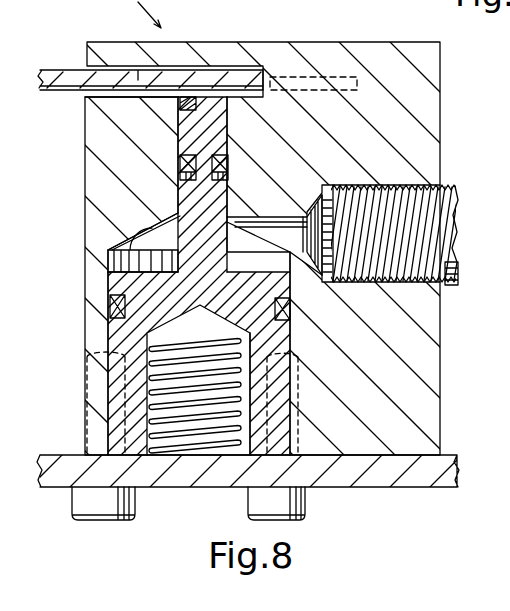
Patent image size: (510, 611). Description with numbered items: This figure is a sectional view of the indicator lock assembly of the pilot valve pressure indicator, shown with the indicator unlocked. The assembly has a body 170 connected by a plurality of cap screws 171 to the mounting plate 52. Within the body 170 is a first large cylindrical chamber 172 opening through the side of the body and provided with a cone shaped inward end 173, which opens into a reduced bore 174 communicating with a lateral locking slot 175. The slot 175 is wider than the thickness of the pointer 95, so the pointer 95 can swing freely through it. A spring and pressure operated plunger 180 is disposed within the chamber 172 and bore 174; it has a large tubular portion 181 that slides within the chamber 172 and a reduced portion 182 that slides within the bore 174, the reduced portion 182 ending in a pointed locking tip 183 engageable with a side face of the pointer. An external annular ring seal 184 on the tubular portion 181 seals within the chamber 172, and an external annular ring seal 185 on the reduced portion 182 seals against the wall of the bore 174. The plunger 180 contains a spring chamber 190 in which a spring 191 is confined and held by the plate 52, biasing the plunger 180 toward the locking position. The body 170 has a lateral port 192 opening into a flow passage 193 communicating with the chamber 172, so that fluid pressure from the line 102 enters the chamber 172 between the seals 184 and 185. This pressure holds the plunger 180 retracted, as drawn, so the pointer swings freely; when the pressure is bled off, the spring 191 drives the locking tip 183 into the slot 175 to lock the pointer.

The mounting plate 52 is at (413, 475).
The pointer 95 is at (71, 72).
The line 102 is at (446, 186).
The body 170 is at (436, 368).
The cap screws 171 is at (306, 508).
The first large cylindrical chamber 172 is at (288, 263).
The cone shaped inward end 173 is at (110, 258).
The reduced bore 174 is at (177, 195).
The lateral locking slot 175 is at (100, 97).
The plunger 180 is at (126, 340).
The large tubular portion 181 is at (270, 338).
The reduced portion 182 is at (223, 134).
The pointed locking tip 183 is at (187, 99).
The external annular ring seal 184 is at (291, 304).
The external annular ring seal 185 is at (226, 170).
The spring chamber 190 is at (228, 452).
The spring 191 is at (172, 456).
The lateral port 192 is at (416, 283).
The flow passage 193 is at (321, 194).